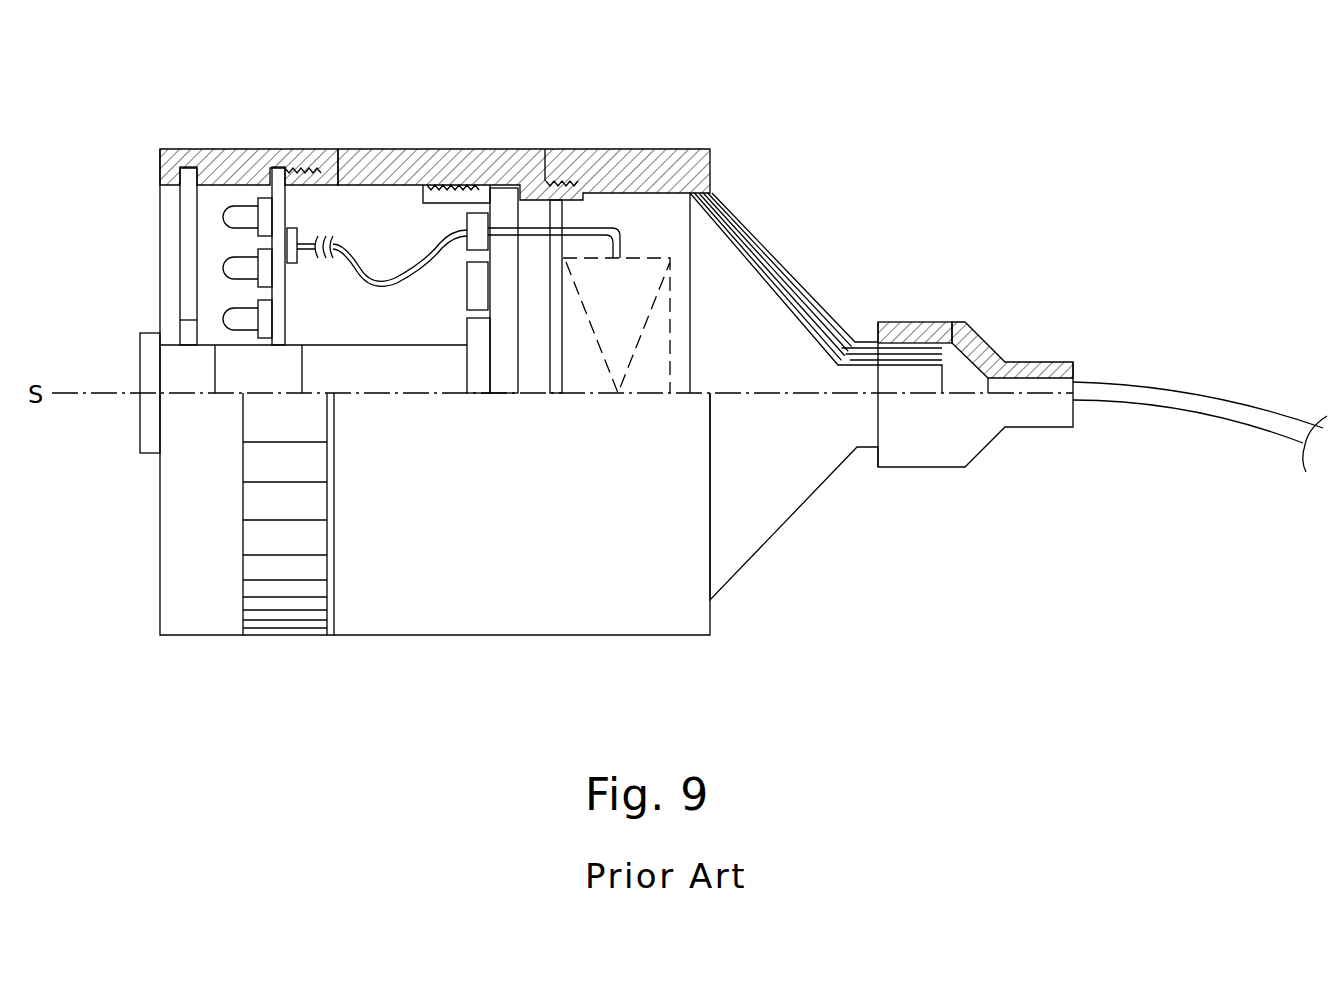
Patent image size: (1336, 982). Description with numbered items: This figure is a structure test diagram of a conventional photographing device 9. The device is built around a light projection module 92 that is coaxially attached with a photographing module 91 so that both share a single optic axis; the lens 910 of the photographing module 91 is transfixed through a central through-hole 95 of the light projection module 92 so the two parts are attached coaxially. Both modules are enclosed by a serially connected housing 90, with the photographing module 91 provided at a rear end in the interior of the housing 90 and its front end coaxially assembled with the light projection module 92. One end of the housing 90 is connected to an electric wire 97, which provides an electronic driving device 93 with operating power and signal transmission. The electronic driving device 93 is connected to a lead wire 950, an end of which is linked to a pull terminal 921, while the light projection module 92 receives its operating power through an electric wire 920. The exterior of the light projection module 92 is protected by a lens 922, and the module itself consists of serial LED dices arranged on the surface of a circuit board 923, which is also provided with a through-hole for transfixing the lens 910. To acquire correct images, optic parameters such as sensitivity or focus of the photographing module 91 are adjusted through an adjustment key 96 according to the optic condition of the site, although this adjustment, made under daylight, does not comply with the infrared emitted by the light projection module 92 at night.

The photographing device 9 is at (118, 186).
The serially connected housing 90 is at (418, 150).
The photographing module 91 is at (535, 268).
The light projection module 92 is at (247, 192).
The electronic driving device 93 is at (652, 343).
The central through-hole 95 is at (187, 337).
The adjustment key 96 is at (472, 283).
The electric wire 97 is at (1185, 398).
The lens 910 is at (396, 370).
The electric wire 920 is at (386, 282).
The pull terminal 921 is at (486, 227).
The lens 922 is at (188, 262).
The circuit board 923 is at (278, 297).
The lead wire 950 is at (622, 238).